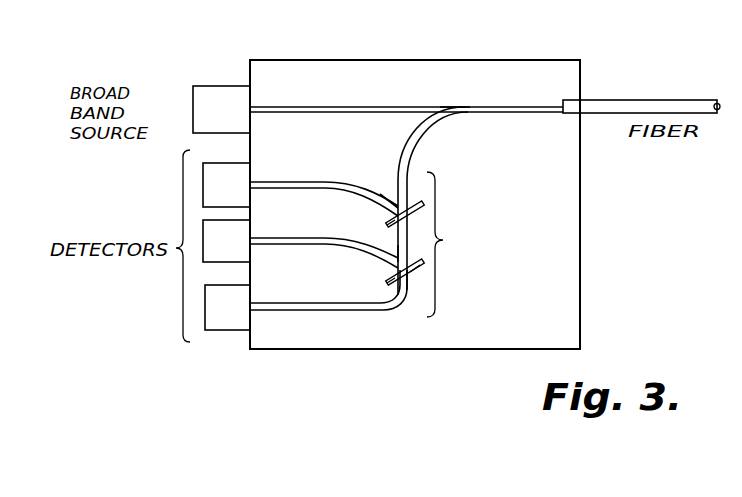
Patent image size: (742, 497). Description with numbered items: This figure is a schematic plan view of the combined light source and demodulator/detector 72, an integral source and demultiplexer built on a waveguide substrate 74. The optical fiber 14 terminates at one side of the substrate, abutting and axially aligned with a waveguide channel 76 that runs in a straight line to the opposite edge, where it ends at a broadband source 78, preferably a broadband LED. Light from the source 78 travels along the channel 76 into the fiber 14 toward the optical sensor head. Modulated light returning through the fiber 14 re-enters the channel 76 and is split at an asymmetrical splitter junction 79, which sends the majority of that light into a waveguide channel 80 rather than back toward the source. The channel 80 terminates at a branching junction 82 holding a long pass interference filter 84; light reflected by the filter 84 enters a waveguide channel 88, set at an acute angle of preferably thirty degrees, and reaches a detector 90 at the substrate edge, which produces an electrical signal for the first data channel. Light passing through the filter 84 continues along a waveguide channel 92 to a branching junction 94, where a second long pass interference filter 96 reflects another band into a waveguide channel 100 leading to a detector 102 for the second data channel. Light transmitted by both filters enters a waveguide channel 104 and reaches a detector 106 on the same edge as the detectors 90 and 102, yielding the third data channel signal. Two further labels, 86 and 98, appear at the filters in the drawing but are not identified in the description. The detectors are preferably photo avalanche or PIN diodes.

The optical fiber 14 is at (665, 100).
The combined light source and demodulator/detector 72 is at (445, 352).
The waveguide substrate 74 is at (581, 235).
The waveguide channel 76 is at (500, 106).
The broadband source 78 is at (216, 86).
The asymmetrical splitter junction 79 is at (455, 106).
The waveguide channel 80 is at (418, 140).
The branching junction 82 is at (398, 204).
The long pass interference filter 84 is at (428, 205).
The reflector end 86 is at (386, 216).
The waveguide channel 88 is at (300, 182).
The detector 90 is at (203, 176).
The waveguide channel 92 is at (413, 250).
The branching junction 94 is at (397, 252).
The long pass interference filter 96 is at (418, 274).
The reflector end 98 is at (386, 281).
The waveguide channel 100 is at (295, 238).
The detector 102 is at (212, 262).
The waveguide channel 104 is at (318, 312).
The detector 106 is at (218, 330).